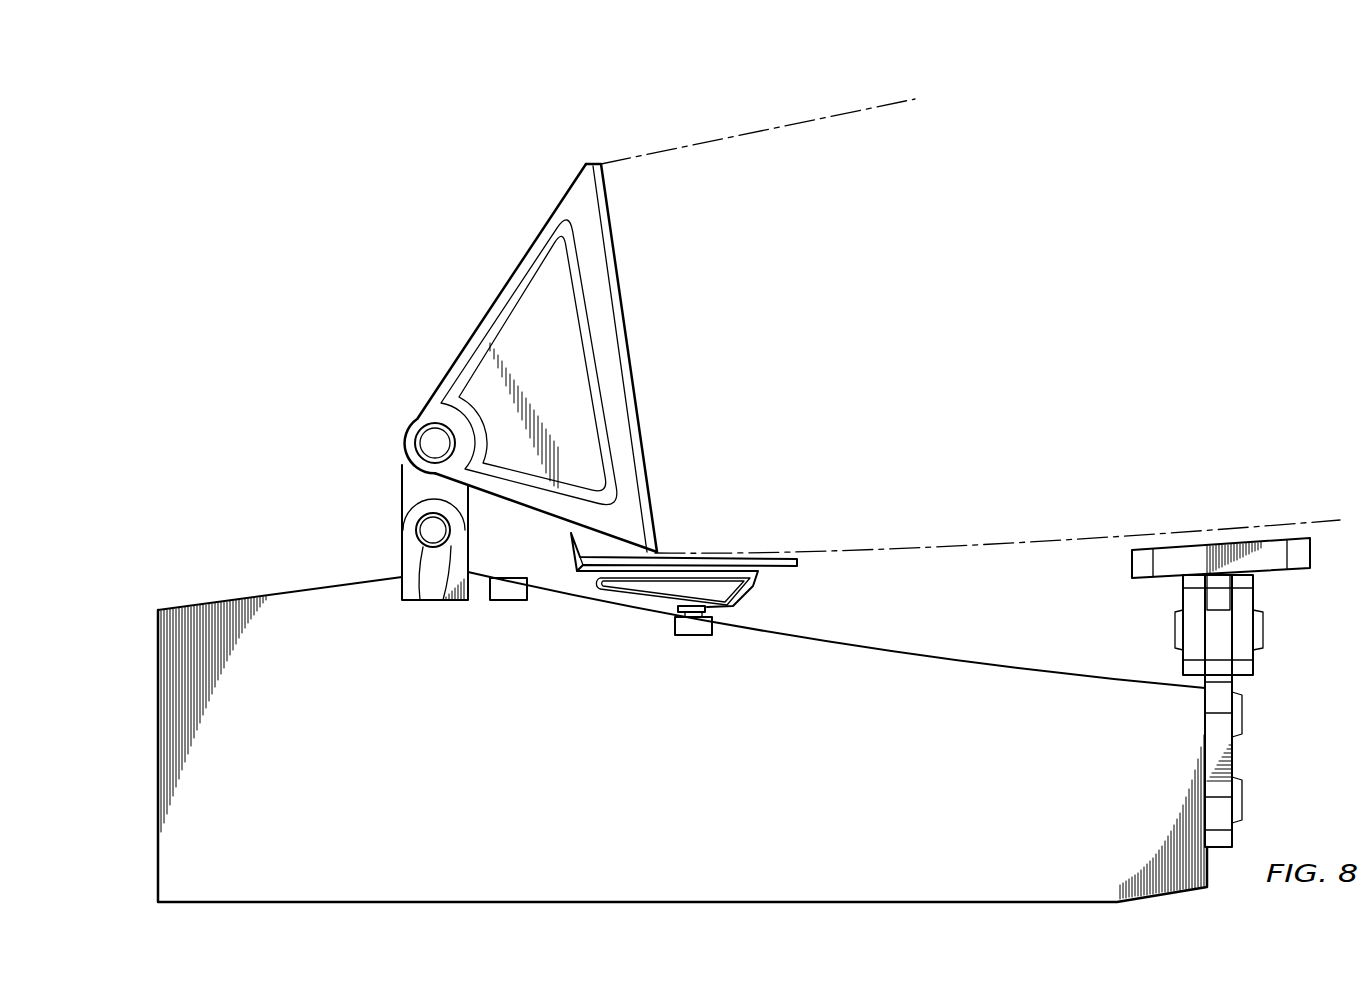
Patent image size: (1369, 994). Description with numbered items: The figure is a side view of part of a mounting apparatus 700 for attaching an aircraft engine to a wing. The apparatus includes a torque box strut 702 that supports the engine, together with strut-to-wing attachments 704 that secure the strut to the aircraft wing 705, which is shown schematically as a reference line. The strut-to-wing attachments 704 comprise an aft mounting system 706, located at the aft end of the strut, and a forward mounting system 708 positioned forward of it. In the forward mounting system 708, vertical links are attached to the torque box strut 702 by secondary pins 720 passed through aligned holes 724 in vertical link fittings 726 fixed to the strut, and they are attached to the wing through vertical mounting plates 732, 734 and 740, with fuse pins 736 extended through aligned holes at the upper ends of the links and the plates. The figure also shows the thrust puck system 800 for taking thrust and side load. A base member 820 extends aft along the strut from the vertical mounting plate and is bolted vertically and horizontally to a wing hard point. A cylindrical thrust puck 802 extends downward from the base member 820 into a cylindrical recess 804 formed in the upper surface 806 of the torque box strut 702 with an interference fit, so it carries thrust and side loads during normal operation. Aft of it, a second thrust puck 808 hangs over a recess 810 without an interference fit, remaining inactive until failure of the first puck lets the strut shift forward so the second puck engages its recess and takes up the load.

The mounting apparatus 700 is at (246, 292).
The torque box strut 702 is at (158, 758).
The strut-to-wing attachments 704 is at (716, 130).
The wing 705 is at (792, 124).
The aft mounting system 706 is at (1311, 513).
The forward mounting system 708 is at (660, 136).
The secondary pins 720 is at (410, 488).
The holes 724 is at (440, 540).
The vertical link fittings 726 is at (400, 596).
The vertical mounting plate 732 is at (617, 257).
The vertical mounting plate 734 is at (643, 400).
The fuse pins 736 is at (433, 446).
The vertical mounting plate 740 is at (627, 330).
The thrust puck system 800 is at (588, 684).
The thrust puck 802 is at (509, 583).
The recess 804 is at (538, 606).
The upper surface 806 is at (962, 650).
The second thrust puck 808 is at (693, 613).
The recess 810 is at (672, 629).
The base member 820 is at (757, 580).